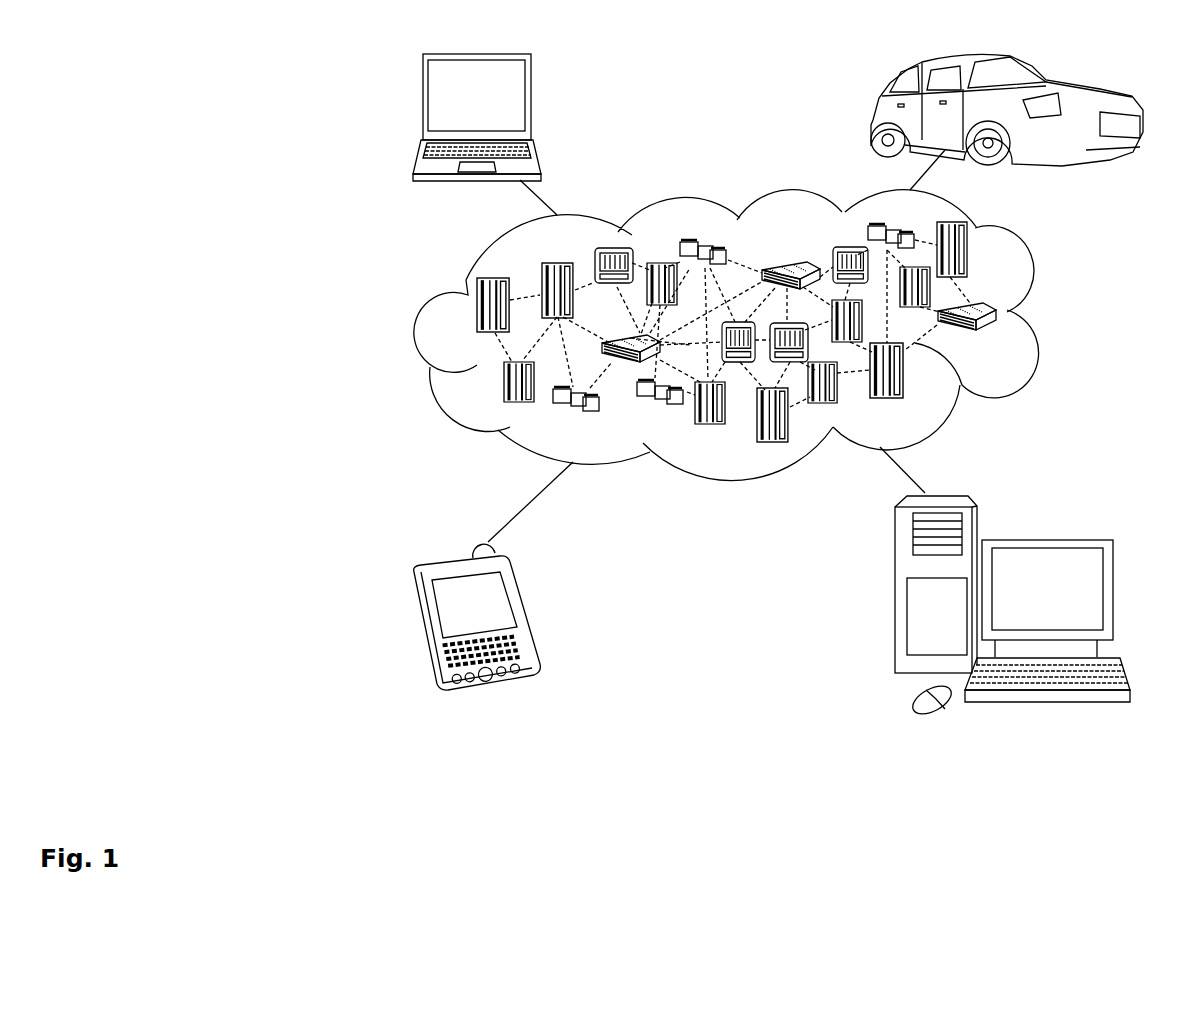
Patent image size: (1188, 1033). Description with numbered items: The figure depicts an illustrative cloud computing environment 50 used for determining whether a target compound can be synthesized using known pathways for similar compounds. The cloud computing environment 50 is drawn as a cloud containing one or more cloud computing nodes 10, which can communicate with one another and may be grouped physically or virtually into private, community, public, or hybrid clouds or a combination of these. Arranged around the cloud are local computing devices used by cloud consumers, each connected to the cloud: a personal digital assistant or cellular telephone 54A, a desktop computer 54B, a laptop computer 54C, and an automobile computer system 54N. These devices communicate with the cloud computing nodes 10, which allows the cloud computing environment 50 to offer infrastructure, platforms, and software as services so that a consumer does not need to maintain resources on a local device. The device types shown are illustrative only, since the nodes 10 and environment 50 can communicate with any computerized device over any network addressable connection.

The cloud computing nodes 10 is at (781, 346).
The cloud computing environment 50 is at (752, 335).
The personal digital assistant (PDA) or cellular telephone 54A is at (497, 617).
The desktop computer 54B is at (1043, 540).
The laptop computer 54C is at (500, 117).
The automobile computer system 54N is at (979, 110).